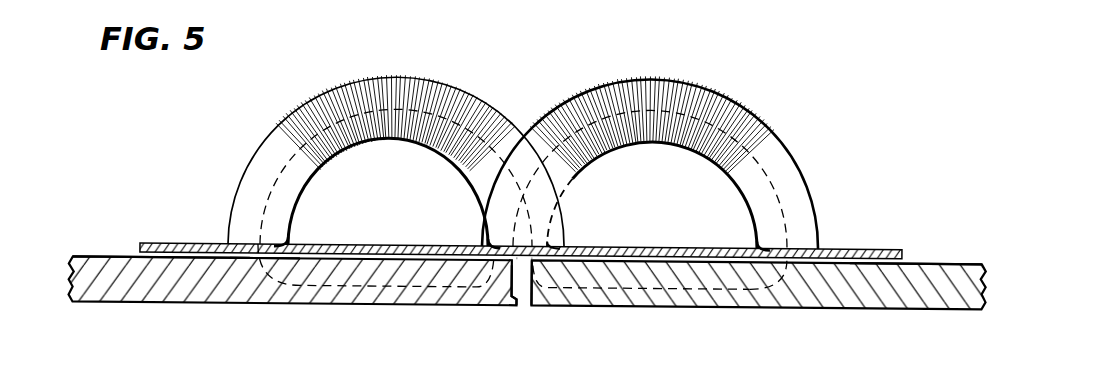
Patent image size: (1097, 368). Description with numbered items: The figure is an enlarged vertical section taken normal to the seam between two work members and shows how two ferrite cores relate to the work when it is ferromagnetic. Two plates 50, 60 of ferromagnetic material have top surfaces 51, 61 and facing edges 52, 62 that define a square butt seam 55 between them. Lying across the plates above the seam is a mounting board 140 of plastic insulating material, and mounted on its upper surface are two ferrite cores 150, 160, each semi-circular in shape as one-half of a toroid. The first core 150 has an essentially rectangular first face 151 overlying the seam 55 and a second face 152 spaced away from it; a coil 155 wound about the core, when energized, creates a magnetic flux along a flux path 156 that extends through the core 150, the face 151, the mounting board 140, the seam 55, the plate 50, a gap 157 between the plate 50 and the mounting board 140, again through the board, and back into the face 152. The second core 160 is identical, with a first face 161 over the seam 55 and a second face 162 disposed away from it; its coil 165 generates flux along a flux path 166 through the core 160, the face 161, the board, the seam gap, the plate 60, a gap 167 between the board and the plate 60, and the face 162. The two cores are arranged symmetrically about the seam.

The plate 50 is at (157, 287).
The top surface 51 is at (108, 257).
The facing edge 52 is at (516, 289).
The seam 55 is at (520, 300).
The plate 60 is at (822, 293).
The top surface 61 is at (937, 258).
The facing edge 62 is at (529, 288).
The mounting board 140 is at (173, 243).
The ferrite core 150 is at (244, 140).
The first face 151 is at (576, 242).
The second face 152 is at (291, 240).
The coil 155 is at (358, 76).
The flux path 156 is at (308, 304).
The gap 157 is at (257, 255).
The ferrite core 160 is at (799, 165).
The first face 161 is at (470, 242).
The second face 162 is at (809, 249).
The coil 165 is at (668, 73).
The flux path 166 is at (662, 283).
The gap 167 is at (785, 253).